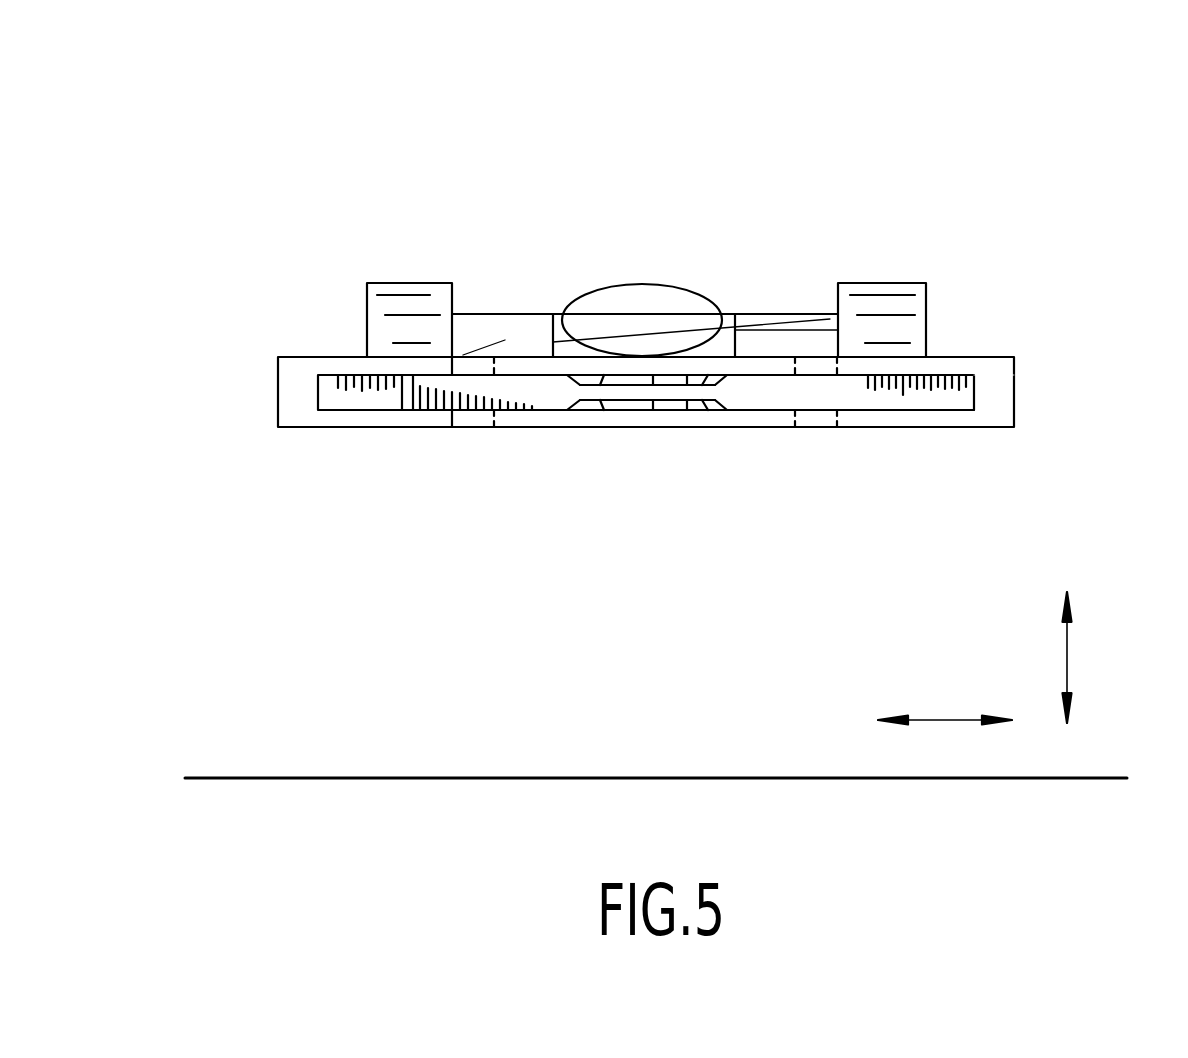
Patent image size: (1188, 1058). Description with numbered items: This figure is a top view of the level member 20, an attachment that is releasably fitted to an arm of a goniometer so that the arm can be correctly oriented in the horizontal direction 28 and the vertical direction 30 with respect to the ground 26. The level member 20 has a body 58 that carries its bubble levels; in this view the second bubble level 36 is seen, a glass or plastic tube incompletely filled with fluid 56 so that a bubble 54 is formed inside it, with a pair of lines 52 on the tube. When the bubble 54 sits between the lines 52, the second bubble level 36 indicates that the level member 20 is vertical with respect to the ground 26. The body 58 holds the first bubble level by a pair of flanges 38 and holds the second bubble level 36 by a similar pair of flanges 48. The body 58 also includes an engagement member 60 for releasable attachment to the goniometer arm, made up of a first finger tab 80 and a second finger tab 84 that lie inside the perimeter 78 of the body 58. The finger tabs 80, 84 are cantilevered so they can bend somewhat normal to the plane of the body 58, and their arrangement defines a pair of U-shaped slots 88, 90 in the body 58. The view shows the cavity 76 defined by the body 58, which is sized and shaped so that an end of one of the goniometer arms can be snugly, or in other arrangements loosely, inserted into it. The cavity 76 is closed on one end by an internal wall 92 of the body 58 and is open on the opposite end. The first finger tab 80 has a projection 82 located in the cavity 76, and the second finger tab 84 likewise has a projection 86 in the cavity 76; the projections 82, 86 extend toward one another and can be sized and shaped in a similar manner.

The level member 20 is at (1023, 165).
The ground 26 is at (243, 777).
The horizontal direction 28 is at (948, 720).
The vertical direction 30 is at (1068, 655).
The second bubble level 36 is at (472, 333).
The flanges 38 is at (635, 292).
The flanges 48 is at (368, 283).
The lines 52 is at (553, 337).
The bubble 54 is at (588, 325).
The fluid 56 is at (807, 337).
The body 58 is at (283, 377).
The engagement member 60 is at (468, 480).
The cavity 76 is at (892, 410).
The perimeter 78 is at (1050, 388).
The first finger tab 80 is at (685, 372).
The projection 82 is at (663, 377).
The second finger tab 84 is at (675, 418).
The projection 86 is at (632, 403).
The U-shaped slot 88 is at (465, 367).
The U-shaped slot 90 is at (460, 418).
The internal wall 92 is at (955, 388).